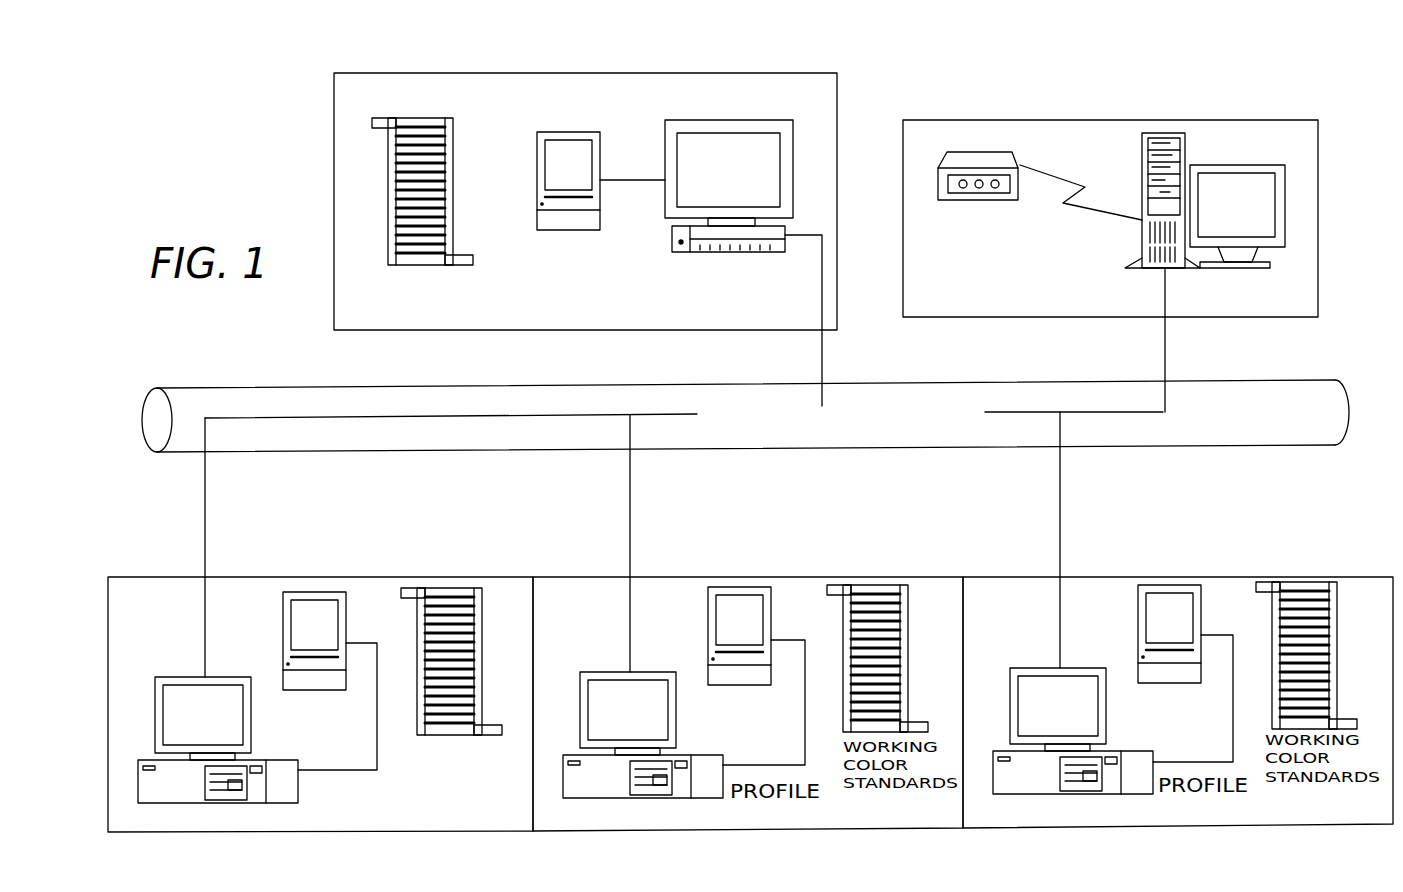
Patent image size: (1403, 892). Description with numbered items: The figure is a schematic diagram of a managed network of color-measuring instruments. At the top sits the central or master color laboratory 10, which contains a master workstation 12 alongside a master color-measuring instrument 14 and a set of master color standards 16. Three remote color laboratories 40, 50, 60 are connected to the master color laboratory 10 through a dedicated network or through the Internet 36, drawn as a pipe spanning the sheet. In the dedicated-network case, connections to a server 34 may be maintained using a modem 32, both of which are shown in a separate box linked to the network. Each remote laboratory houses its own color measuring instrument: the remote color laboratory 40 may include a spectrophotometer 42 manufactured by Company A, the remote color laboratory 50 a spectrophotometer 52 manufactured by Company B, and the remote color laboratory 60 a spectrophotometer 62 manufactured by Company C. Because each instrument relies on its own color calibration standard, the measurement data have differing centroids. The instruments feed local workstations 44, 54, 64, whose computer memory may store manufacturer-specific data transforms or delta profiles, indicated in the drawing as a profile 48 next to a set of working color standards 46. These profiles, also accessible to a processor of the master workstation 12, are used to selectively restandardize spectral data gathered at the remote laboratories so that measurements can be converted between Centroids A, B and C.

The master color laboratory 10 is at (324, 128).
The master workstation 12 is at (727, 120).
The CE-7000 master spectrophotometer 14 is at (537, 157).
The master color standards 16 is at (455, 225).
The modem 32 is at (970, 158).
The server 34 is at (1220, 165).
The Internet 36 is at (1057, 380).
The remote color laboratory 40 is at (497, 571).
The color measuring instrument 42 is at (283, 647).
The workstation 44 is at (138, 778).
The working color standards 46 is at (482, 671).
The profile 48 is at (345, 736).
The remote color laboratory 50 is at (920, 560).
The color measuring instrument 52 is at (708, 620).
The workstation 54 is at (563, 768).
The remote color laboratory 60 is at (1314, 562).
The color measuring instrument 62 is at (1138, 618).
The workstation 64 is at (993, 766).